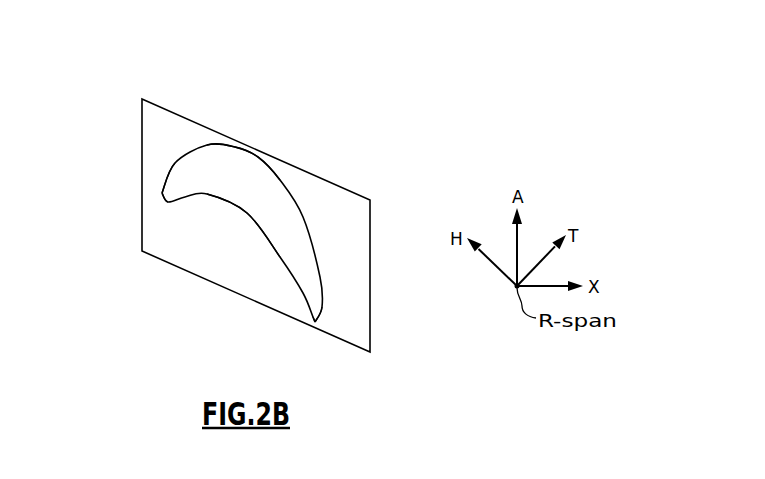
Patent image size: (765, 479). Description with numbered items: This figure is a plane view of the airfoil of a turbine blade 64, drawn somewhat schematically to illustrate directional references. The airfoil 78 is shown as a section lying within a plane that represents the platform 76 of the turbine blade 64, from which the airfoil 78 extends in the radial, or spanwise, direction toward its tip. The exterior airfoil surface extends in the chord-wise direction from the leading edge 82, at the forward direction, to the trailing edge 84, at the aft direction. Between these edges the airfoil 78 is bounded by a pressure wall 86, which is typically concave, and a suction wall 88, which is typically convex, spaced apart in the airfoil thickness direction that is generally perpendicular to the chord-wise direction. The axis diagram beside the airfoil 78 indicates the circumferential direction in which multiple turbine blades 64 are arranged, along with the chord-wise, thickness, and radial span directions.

The turbine blade 64 is at (346, 131).
The platform 76 is at (196, 109).
The airfoil 78 is at (155, 207).
The leading edge 82 is at (160, 193).
The trailing edge 84 is at (315, 322).
The pressure wall 86 is at (247, 213).
The suction wall 88 is at (258, 157).